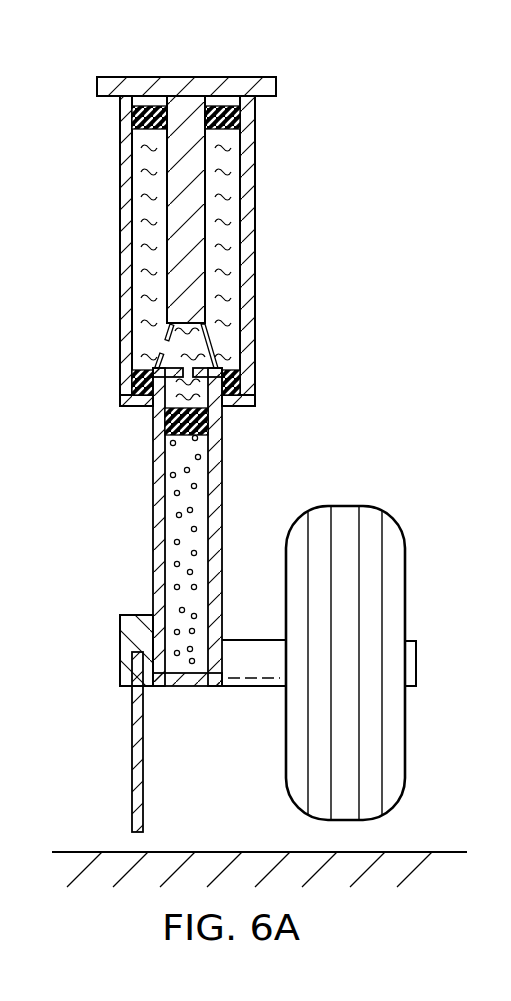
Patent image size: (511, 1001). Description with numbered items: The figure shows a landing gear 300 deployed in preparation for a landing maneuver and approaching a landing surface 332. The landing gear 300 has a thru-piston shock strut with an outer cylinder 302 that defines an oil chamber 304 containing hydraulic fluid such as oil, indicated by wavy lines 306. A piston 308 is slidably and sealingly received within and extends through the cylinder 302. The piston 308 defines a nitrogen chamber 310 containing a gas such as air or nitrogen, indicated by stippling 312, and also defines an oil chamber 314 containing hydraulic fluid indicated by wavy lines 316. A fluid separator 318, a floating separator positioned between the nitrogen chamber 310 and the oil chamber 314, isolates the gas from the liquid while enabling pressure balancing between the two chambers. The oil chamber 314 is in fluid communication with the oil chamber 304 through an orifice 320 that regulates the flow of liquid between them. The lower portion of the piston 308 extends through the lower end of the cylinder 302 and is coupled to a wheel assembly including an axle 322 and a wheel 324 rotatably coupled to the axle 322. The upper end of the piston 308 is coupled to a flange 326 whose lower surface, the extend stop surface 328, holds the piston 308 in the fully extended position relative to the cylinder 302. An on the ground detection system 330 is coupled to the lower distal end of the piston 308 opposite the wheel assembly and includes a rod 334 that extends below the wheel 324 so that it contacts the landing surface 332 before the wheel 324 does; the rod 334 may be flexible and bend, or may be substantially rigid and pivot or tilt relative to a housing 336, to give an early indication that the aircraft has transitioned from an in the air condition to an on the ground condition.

The landing gear 300 is at (366, 160).
The outer cylinder 302 is at (248, 166).
The oil chamber 304 is at (242, 209).
The wavy lines 306 is at (226, 241).
The piston 308 is at (177, 265).
The nitrogen chamber 310 is at (172, 535).
The stippling 312 is at (177, 583).
The oil chamber 314 is at (200, 392).
The wavy lines 316 is at (168, 432).
The fluid separator 318 is at (187, 438).
The orifice 320 is at (177, 368).
The axle 322 is at (253, 688).
The wheel 324 is at (405, 722).
The flange 326 is at (235, 77).
The extend stop surface 328 is at (104, 96).
The on the ground detection system 330 is at (95, 723).
The landing surface 332 is at (76, 852).
The rod 334 is at (137, 718).
The housing 336 is at (127, 638).